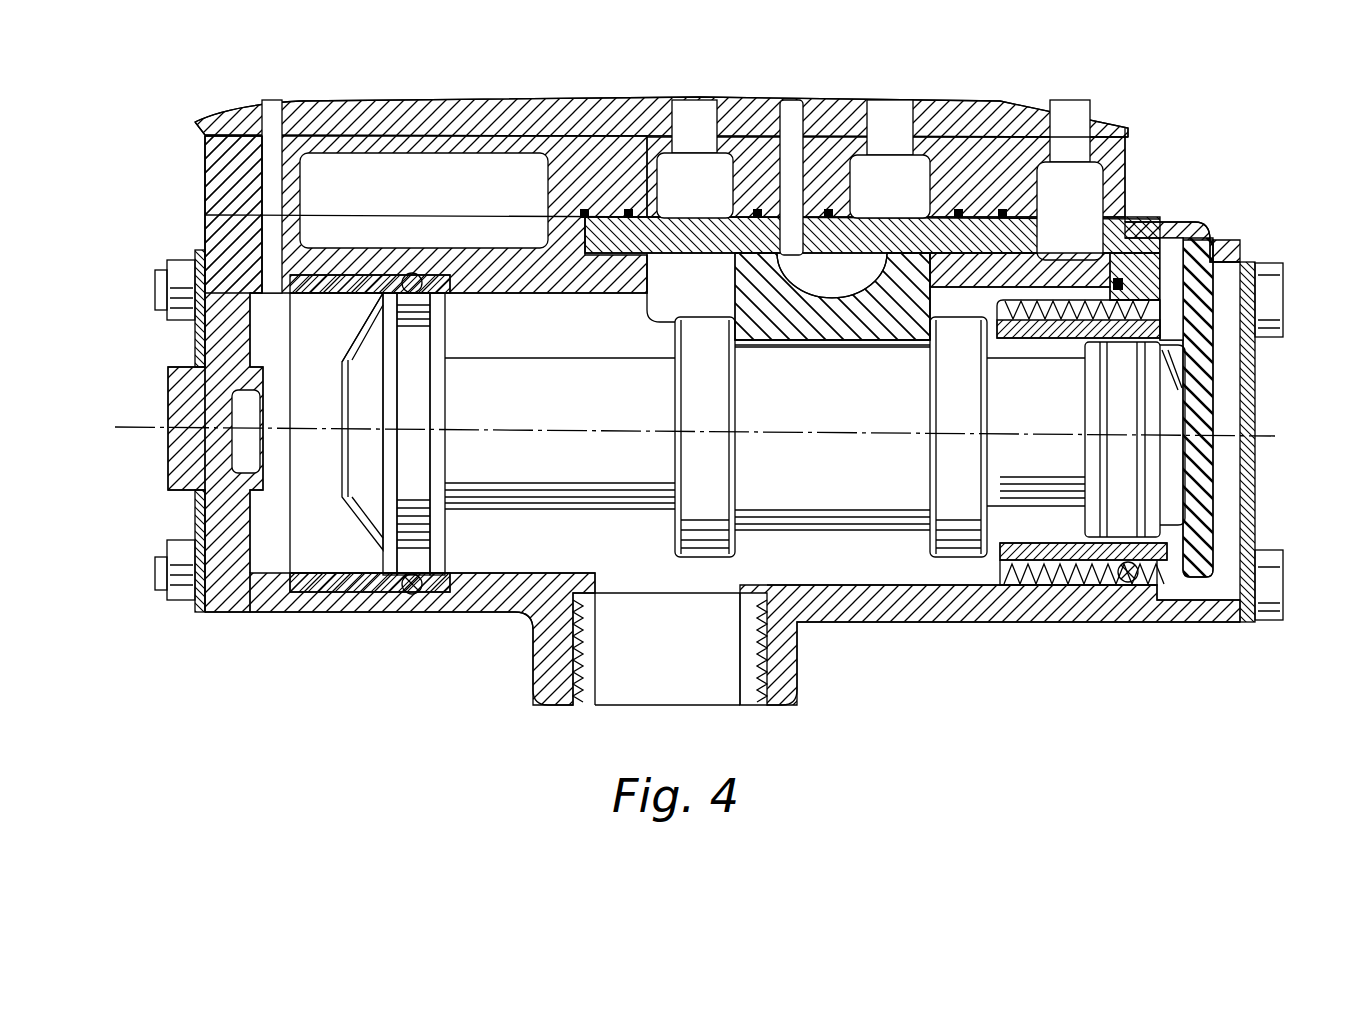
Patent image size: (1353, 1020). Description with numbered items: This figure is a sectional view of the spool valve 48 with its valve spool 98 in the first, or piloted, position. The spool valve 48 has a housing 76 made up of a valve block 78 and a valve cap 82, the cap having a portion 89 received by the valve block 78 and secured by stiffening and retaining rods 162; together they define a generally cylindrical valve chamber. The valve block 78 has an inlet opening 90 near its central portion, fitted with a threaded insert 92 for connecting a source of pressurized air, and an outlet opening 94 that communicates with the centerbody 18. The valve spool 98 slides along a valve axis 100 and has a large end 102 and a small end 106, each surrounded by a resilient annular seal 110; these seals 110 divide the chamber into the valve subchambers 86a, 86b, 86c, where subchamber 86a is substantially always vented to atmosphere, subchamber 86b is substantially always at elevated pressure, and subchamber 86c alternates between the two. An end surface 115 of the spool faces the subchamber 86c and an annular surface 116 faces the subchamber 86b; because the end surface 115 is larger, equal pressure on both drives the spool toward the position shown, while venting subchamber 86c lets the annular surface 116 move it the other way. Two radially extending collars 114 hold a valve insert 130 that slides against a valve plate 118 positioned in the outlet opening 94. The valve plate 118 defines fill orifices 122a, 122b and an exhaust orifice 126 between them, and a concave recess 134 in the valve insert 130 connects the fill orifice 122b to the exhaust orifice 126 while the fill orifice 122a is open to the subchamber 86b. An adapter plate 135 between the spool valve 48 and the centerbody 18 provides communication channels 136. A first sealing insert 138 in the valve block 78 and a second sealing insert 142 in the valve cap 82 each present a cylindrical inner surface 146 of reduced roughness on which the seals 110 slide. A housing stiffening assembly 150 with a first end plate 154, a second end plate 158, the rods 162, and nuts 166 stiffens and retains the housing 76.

The centerbody 18 is at (388, 128).
The spool valve 48 is at (262, 712).
The housing 76 is at (838, 630).
The valve block 78 is at (500, 615).
The valve cap 82 is at (1192, 615).
The valve subchamber 86a is at (1190, 520).
The valve subchamber 86b is at (608, 548).
The valve subchamber 86c is at (318, 395).
The portion 89 is at (990, 600).
The inlet opening 90 is at (634, 693).
The threaded insert 92 is at (745, 706).
The outlet opening 94 is at (680, 296).
The valve spool 98 is at (480, 357).
The valve axis 100 is at (1250, 435).
The large end 102 is at (360, 452).
The small end 106 is at (1172, 405).
The annular seal 110 is at (405, 598).
The radially extending collar 114 is at (678, 392).
The end surface 115 is at (340, 370).
The annular surface 116 is at (440, 538).
The valve plate 118 is at (995, 240).
The fill orifice 122a is at (690, 150).
The fill orifice 122b is at (1065, 128).
The exhaust orifice 126 is at (792, 165).
The valve insert 130 is at (770, 330).
The concave recess 134 is at (840, 260).
The adapter plate 135 is at (1132, 168).
The communication channel 136 is at (884, 160).
The first sealing insert 138 is at (300, 598).
The second sealing insert 142 is at (1040, 600).
The cylindrical inner surface 146 is at (340, 533).
The housing stiffening assembly 150 is at (165, 340).
The first end plate 154 is at (170, 505).
The second end plate 158 is at (1235, 360).
The stiffening and retaining rod 162 is at (1268, 300).
The nut 166 is at (182, 256).